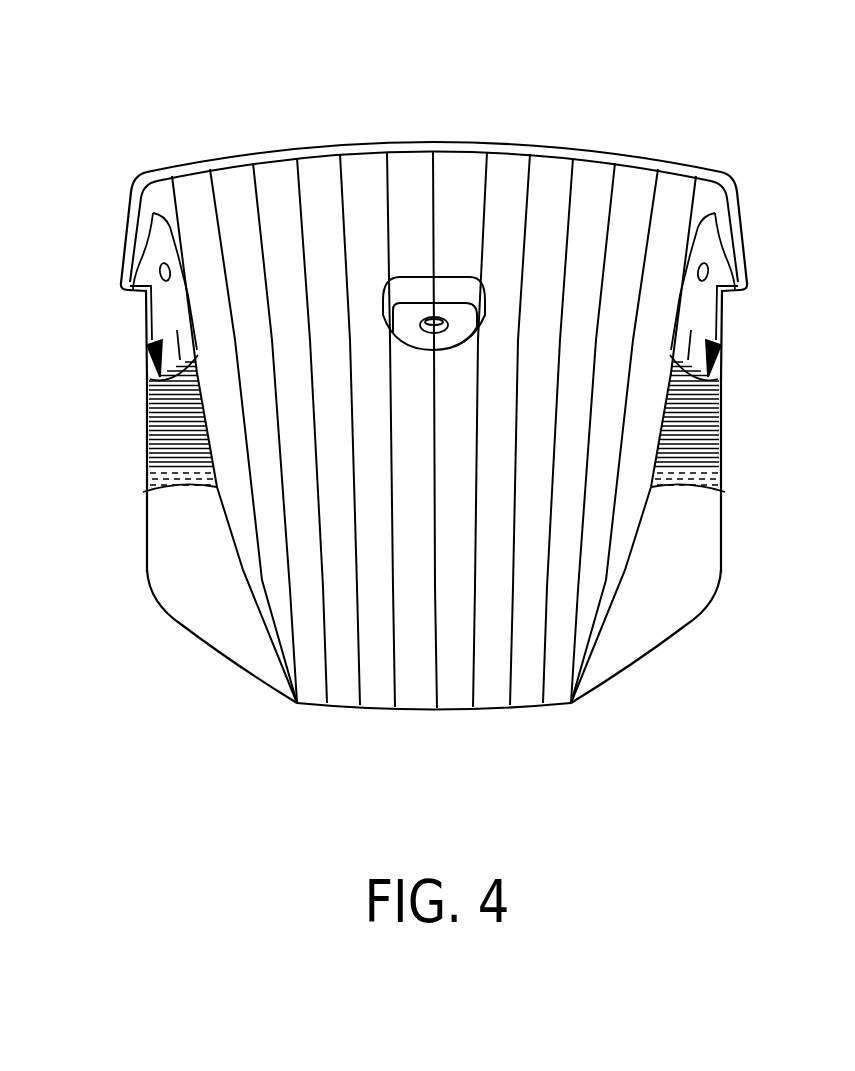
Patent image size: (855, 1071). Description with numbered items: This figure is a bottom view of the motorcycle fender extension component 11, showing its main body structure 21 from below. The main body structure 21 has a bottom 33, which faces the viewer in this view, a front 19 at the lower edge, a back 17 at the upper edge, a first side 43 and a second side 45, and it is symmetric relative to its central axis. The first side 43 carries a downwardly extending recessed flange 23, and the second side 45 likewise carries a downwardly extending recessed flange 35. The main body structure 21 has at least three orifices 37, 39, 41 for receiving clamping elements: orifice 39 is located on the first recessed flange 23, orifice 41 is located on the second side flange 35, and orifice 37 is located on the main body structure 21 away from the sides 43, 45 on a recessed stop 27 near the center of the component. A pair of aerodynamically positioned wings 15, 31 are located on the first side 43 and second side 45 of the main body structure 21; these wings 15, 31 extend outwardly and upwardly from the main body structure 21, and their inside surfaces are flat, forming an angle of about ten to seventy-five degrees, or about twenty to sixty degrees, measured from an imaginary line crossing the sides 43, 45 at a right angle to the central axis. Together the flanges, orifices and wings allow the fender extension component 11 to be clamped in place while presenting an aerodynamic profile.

The motorcycle fender extension component 11 is at (590, 125).
The wing 15 is at (183, 577).
The back 17 is at (441, 144).
The front 19 is at (360, 710).
The main body structure 21 is at (287, 647).
The recessed flange 23 is at (147, 378).
The recessed stop 27 is at (415, 287).
The wing 31 is at (698, 513).
The bottom 33 is at (450, 637).
The recessed flange 35 is at (723, 390).
The orifice 37 is at (425, 345).
The orifice 39 is at (177, 235).
The orifice 41 is at (702, 260).
The first side 43 is at (143, 492).
The second side 45 is at (627, 580).